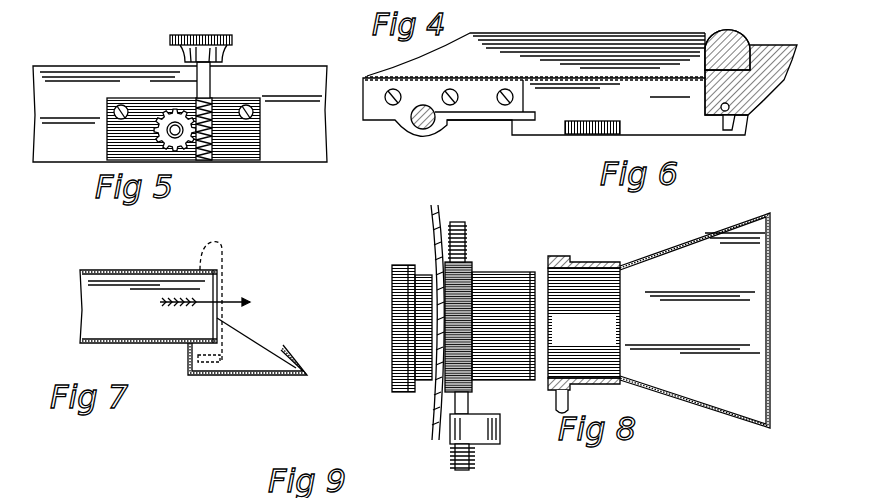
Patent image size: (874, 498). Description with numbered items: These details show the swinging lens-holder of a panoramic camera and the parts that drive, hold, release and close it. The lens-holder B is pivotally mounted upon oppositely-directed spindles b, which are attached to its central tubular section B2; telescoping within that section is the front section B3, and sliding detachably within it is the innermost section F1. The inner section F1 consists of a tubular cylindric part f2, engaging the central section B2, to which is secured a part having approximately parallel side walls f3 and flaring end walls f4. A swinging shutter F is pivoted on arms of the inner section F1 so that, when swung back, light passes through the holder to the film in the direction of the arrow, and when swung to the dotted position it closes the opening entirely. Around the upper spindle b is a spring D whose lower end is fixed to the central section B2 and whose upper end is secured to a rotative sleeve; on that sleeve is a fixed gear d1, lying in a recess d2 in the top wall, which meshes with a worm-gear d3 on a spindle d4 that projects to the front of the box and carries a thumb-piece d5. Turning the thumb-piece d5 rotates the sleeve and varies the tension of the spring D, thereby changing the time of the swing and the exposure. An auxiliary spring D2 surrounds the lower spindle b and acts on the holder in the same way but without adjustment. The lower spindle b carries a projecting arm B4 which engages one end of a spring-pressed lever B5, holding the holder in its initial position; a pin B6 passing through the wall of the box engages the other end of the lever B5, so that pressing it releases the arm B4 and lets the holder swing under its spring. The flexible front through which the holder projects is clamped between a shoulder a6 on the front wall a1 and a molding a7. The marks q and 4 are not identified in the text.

In FIG. 5, the front wall a1 is at (180, 114).
In FIG. 6, the front wall a1 is at (555, 84).
In FIG. 5, the fixed gear d1 is at (107, 141).
In FIG. 5, the recess d2 is at (238, 106).
In FIG. 5, the worm-gear d3 is at (216, 98).
In FIG. 5, the spindle d4 is at (203, 80).
In FIG. 5, the thumb-piece d5 is at (216, 42).
In FIG. 5, the spindle b is at (171, 116).
In FIG. 6, the spindle b is at (414, 127).
In FIG. 9, the spindle b is at (462, 222).
In FIG. 6, the projecting arm B4 is at (500, 112).
In FIG. 6, the spring-pressed lever B5 is at (575, 125).
In FIG. 6, the pin B6 is at (752, 100).
In FIG. 6, the shoulder a6 is at (745, 46).
In FIG. 6, the molding a7 is at (735, 33).
In FIG. 7, the inner section F1 is at (102, 270).
In FIG. 8, the inner section F1 is at (633, 262).
In FIG. 7, the parallel side walls f3 is at (164, 270).
In FIG. 8, the parallel side walls f3 is at (695, 293).
In FIG. 7, the flaring end walls f4 is at (171, 305).
In FIG. 8, the flaring end walls f4 is at (719, 228).
In FIG. 7, the swinging shutter F is at (252, 375).
In FIG. 9, the front section B3 is at (400, 383).
In FIG. 9, the strap q is at (432, 322).
In FIG. 9, the spring D is at (470, 237).
In FIG. 9, the auxiliary spring D2 is at (476, 458).
In FIG. 9, the central tubular section B2 is at (518, 272).
In FIG. 8, the central tubular section B2 is at (580, 297).
In FIG. 9, the lens-holder B is at (498, 357).
In FIG. 9, the mark 4 is at (542, 327).
In FIG. 8, the tubular cylindric part f2 is at (601, 262).